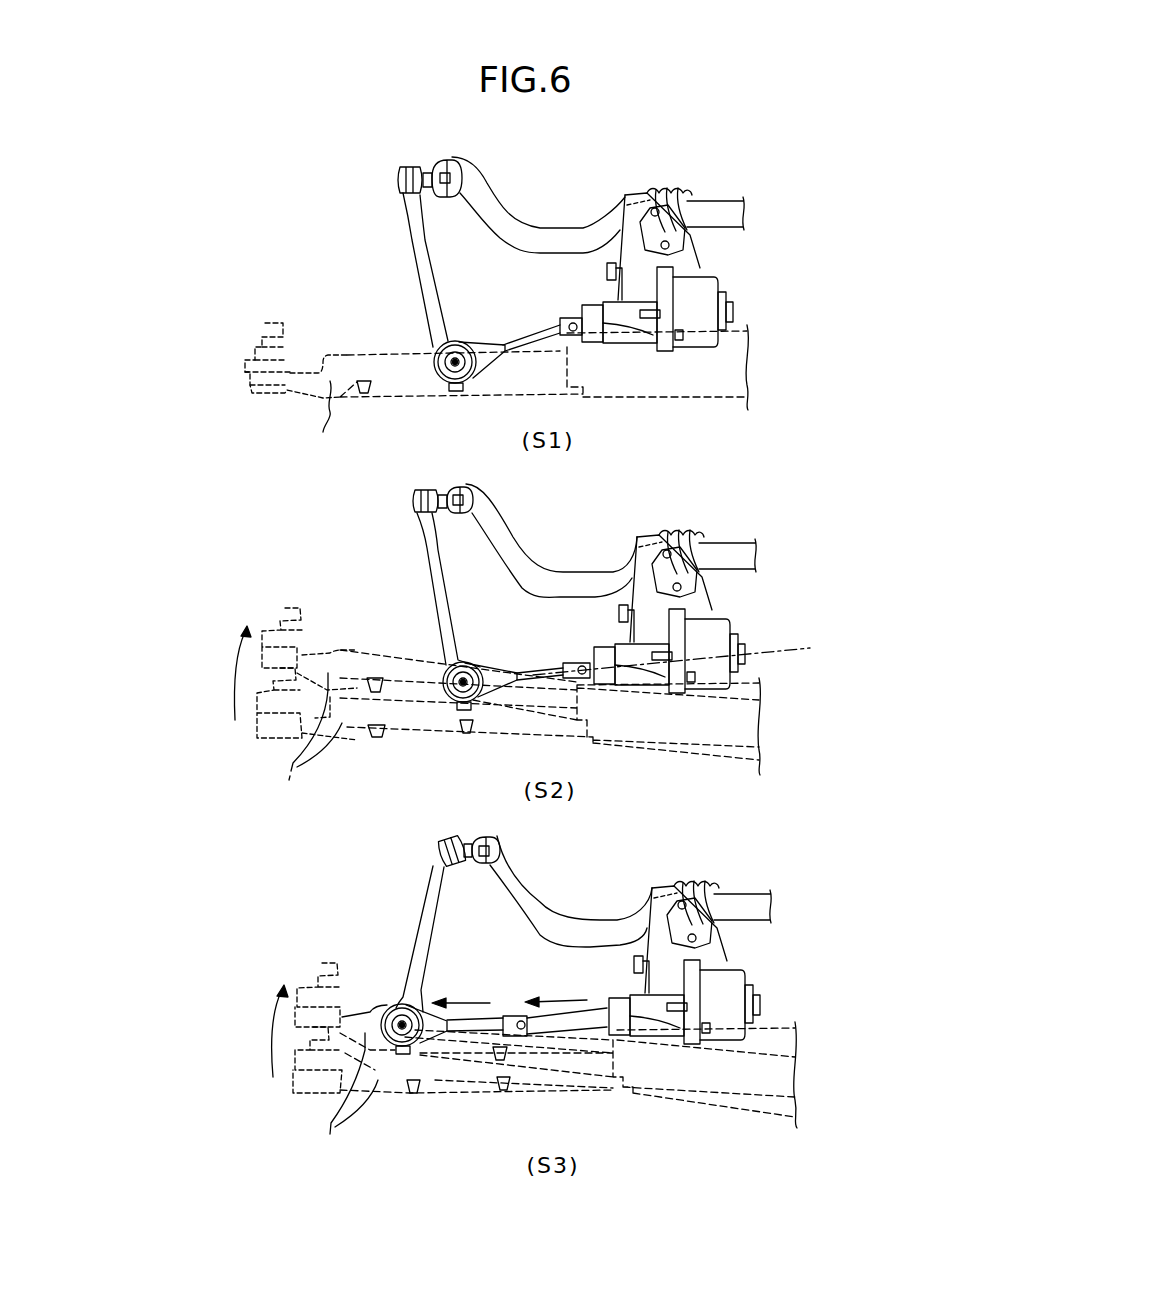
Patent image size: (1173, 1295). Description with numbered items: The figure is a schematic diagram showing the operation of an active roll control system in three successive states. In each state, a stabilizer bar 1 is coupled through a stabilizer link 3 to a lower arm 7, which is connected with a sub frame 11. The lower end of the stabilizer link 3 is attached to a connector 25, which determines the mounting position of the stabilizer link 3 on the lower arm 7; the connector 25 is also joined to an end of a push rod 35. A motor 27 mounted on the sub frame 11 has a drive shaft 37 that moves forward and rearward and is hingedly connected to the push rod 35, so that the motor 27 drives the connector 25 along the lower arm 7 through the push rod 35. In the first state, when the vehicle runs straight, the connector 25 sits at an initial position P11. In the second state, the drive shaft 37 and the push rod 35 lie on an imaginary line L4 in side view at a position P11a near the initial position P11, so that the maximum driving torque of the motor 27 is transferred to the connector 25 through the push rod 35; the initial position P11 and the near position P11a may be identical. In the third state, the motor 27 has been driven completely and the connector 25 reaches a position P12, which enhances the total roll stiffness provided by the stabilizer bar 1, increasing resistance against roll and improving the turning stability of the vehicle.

The stabilizer bar 1 is at (714, 199).
The stabilizer link 3 is at (417, 240).
The lower arm 7 is at (316, 740).
The sub frame 11 is at (713, 370).
The connector 25 is at (436, 343).
The motor 27 is at (697, 297).
The push rod 35 is at (521, 340).
The drive shaft 37 is at (593, 1008).
The imaginary line L4 is at (760, 648).
The initial position P11 is at (455, 371).
The near position P11a is at (462, 690).
The position P12 is at (406, 1033).